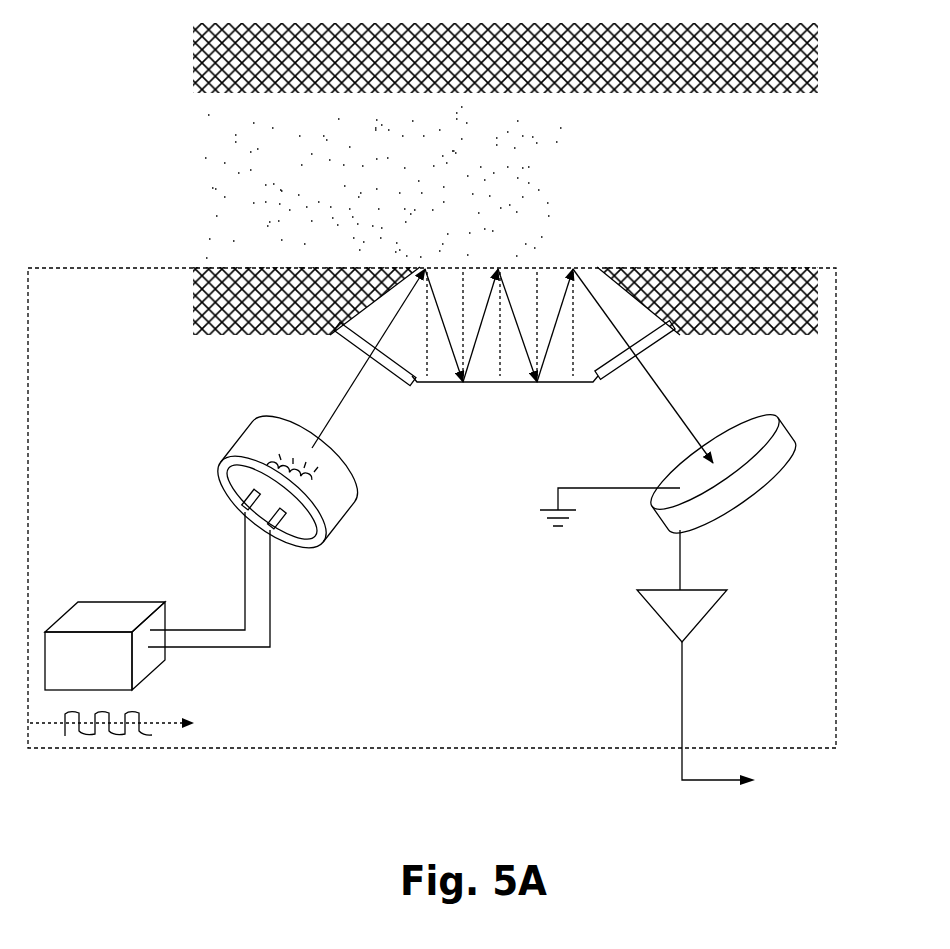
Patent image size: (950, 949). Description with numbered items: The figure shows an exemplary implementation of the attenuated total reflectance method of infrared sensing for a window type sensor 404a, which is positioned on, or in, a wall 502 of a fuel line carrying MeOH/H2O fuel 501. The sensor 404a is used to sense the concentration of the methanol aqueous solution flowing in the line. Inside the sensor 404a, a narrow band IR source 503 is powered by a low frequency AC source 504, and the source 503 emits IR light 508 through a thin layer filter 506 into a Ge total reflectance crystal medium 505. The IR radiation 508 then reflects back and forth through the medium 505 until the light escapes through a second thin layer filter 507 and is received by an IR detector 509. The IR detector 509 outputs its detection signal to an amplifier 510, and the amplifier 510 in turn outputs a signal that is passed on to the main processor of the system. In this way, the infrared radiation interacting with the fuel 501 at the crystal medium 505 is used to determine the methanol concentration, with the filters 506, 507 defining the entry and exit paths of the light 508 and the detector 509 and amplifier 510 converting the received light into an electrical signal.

The MeOH/H2O fuel 501 is at (477, 182).
The wall 502 is at (195, 300).
The narrow band IR source 503 is at (283, 482).
The low frequency AC source 504 is at (150, 624).
The Ge total reflectance crystal medium 505 is at (480, 370).
The thin layer filter 506 is at (345, 352).
The thin layer filter 507 is at (660, 343).
The IR light 508 is at (353, 387).
The IR detector 509 is at (673, 495).
The amplifier 510 is at (699, 673).
The window type sensor 404a is at (432, 508).